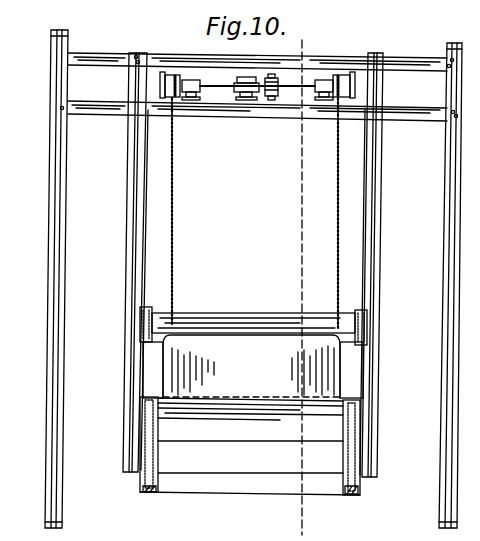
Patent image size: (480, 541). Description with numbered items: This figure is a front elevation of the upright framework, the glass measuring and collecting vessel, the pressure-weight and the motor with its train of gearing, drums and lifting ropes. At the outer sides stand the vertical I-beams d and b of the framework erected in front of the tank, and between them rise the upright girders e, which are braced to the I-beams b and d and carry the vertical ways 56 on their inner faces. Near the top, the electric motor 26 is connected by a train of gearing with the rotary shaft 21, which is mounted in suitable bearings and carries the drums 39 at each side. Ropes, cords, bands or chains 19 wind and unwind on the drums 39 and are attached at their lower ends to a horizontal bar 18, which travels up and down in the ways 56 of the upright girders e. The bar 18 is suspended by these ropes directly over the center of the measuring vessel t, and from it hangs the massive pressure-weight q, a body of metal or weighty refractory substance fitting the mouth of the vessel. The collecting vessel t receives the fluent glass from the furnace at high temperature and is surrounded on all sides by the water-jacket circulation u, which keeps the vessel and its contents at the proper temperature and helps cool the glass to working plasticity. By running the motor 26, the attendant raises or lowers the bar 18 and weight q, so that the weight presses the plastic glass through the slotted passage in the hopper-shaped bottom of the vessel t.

The drums 39 is at (160, 80).
The electric motor 26 is at (247, 96).
The rotary shaft 21 is at (290, 90).
The ropes, cords, bands, or chains 19 is at (172, 246).
The vertical ways 56 is at (145, 190).
The horizontal bar 18 is at (152, 310).
The vertical I-beam d is at (52, 142).
The vertical I-beam b is at (462, 150).
The upright girders e is at (130, 144).
The pressure-weight q is at (253, 366).
The collecting vessel t is at (143, 486).
The water-jacket circulation u is at (350, 488).